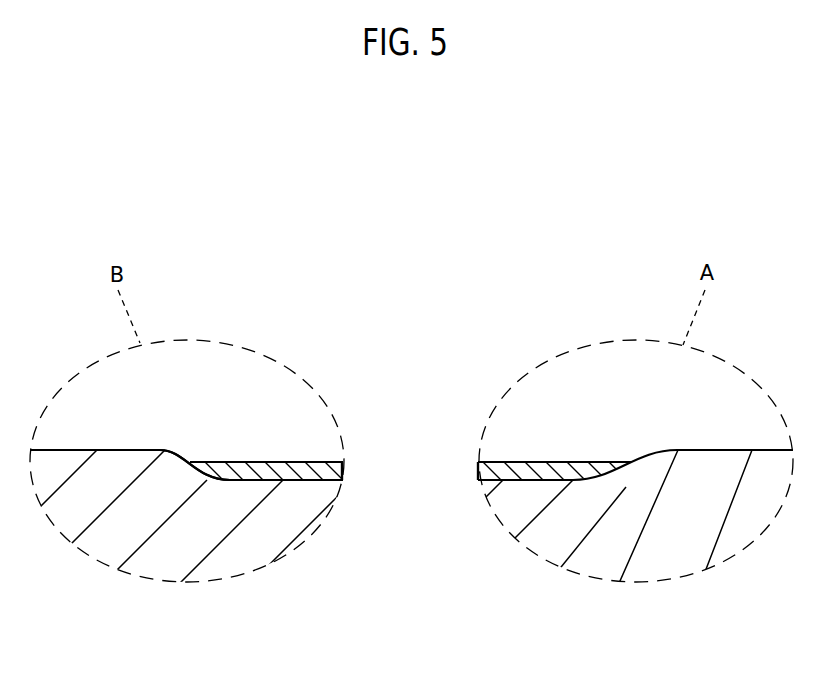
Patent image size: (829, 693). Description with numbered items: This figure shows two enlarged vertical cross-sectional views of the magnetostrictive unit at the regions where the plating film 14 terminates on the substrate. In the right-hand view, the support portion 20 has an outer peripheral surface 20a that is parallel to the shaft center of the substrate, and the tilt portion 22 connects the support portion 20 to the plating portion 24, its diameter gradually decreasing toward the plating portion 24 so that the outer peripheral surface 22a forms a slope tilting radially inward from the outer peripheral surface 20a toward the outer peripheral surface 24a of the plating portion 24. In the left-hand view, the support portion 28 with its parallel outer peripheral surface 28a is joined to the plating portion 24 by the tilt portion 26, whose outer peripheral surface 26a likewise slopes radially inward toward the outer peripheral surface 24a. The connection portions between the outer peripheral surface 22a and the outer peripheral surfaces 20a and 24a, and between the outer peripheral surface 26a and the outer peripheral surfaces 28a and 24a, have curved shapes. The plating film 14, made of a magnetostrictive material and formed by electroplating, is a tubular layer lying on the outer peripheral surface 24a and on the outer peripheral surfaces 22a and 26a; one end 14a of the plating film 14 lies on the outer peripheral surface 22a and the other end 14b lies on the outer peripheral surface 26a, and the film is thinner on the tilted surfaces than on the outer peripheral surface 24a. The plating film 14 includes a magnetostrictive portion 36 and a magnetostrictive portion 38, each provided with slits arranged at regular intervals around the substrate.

The plating film 14 is at (303, 454).
The one end of plating film 14a is at (615, 463).
The other end of plating film 14b is at (202, 468).
The support portion 20 is at (725, 507).
The outer peripheral surface of support portion 20a is at (707, 450).
The tilt portion 22 is at (627, 488).
The outer peripheral surface of tilt portion 22a is at (640, 453).
The plating portion 24 is at (307, 510).
The outer peripheral surface of plating portion 24a is at (283, 480).
The tilt portion 26 is at (197, 477).
The outer peripheral surface of tilt portion 26a is at (183, 452).
The support portion 28 is at (87, 498).
The outer peripheral surface of support portion 28a is at (107, 450).
The magnetostrictive portion 36 is at (478, 473).
The magnetostrictive portion 38 is at (344, 470).